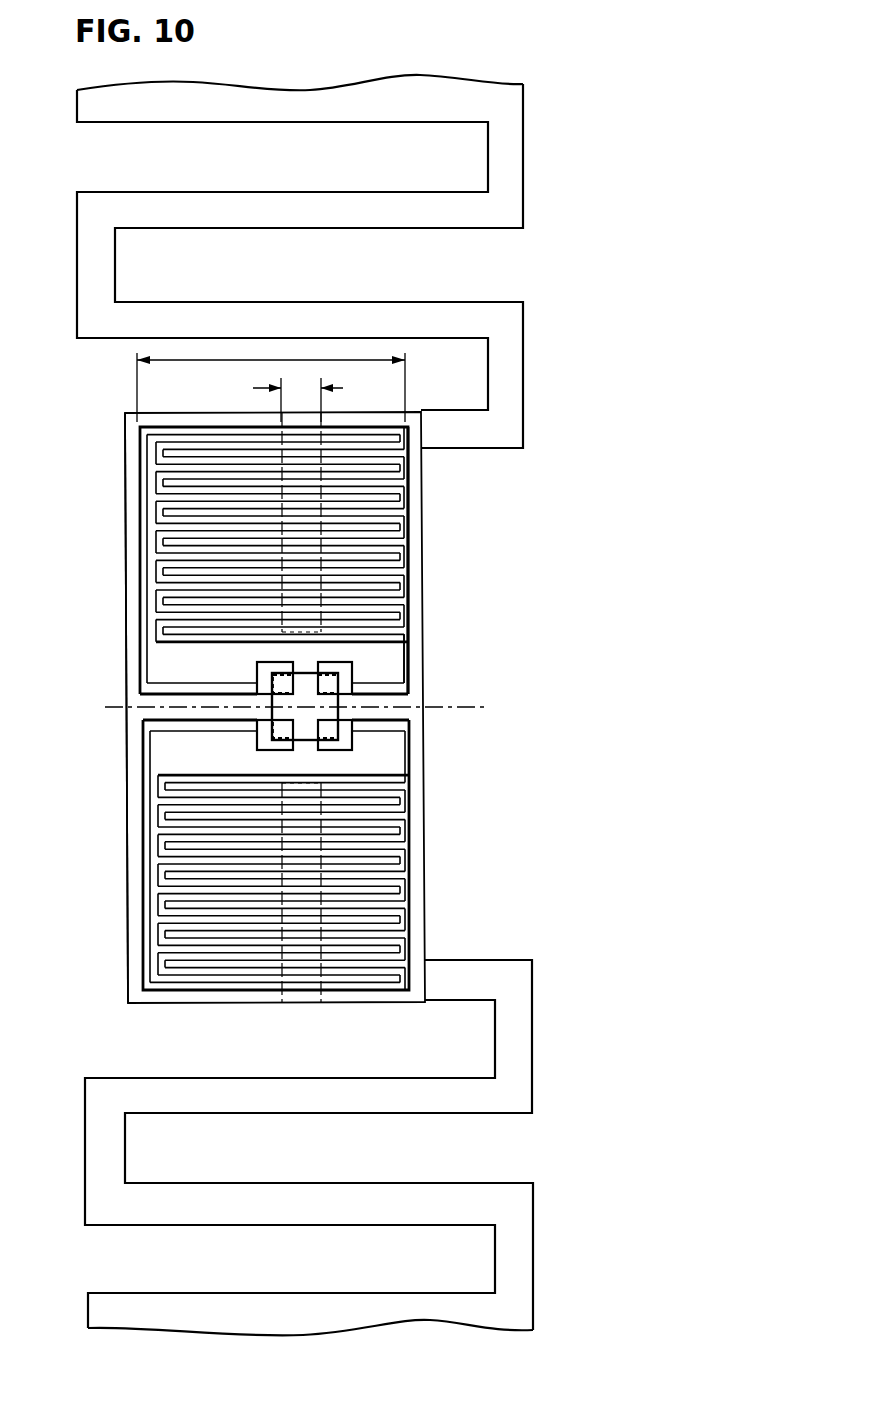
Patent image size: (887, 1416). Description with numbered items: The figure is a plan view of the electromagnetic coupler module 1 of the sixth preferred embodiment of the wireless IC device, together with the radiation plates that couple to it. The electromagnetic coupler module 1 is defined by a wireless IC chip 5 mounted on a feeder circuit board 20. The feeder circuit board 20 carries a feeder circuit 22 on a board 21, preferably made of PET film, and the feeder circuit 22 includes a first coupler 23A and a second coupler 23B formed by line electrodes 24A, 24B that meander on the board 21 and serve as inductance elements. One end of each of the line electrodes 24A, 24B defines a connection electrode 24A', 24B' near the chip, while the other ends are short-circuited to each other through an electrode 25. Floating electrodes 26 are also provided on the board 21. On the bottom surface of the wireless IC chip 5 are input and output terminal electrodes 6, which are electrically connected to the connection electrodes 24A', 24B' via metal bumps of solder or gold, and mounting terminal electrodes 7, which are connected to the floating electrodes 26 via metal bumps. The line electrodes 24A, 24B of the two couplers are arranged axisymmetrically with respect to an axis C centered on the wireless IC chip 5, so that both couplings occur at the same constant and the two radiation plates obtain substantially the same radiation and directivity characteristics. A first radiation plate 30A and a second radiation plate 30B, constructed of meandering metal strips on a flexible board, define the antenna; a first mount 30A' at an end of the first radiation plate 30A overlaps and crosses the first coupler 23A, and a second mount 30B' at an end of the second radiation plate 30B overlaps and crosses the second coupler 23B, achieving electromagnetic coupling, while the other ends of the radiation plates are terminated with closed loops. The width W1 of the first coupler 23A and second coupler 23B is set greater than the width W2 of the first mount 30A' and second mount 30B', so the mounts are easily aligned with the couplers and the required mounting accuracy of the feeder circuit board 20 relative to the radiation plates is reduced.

The electromagnetic coupler module 1 is at (497, 502).
The feeder circuit board 20 is at (432, 831).
The board 21 is at (125, 478).
The feeder circuit 22 is at (418, 587).
The first coupler 23A is at (213, 477).
The second coupler 23B is at (203, 928).
The line electrode 24A is at (213, 560).
The line electrode 24B is at (215, 855).
The connection electrode 24A' is at (161, 662).
The connection electrode 24B' is at (155, 754).
The electrode 25 is at (410, 668).
The floating electrodes 26 is at (352, 665).
The wireless IC chip 5 is at (303, 741).
The input and output terminal electrodes 6 is at (270, 692).
The mounting terminal electrodes 7 is at (340, 690).
The first radiation plate 30A is at (362, 261).
The second radiation plate 30B is at (366, 1147).
The first mount 30A' is at (175, 522).
The second mount 30B' is at (406, 892).
The axis C is at (306, 707).
The width of the first and second couplers W1 is at (287, 358).
The width of the first and second mounts W2 is at (302, 386).